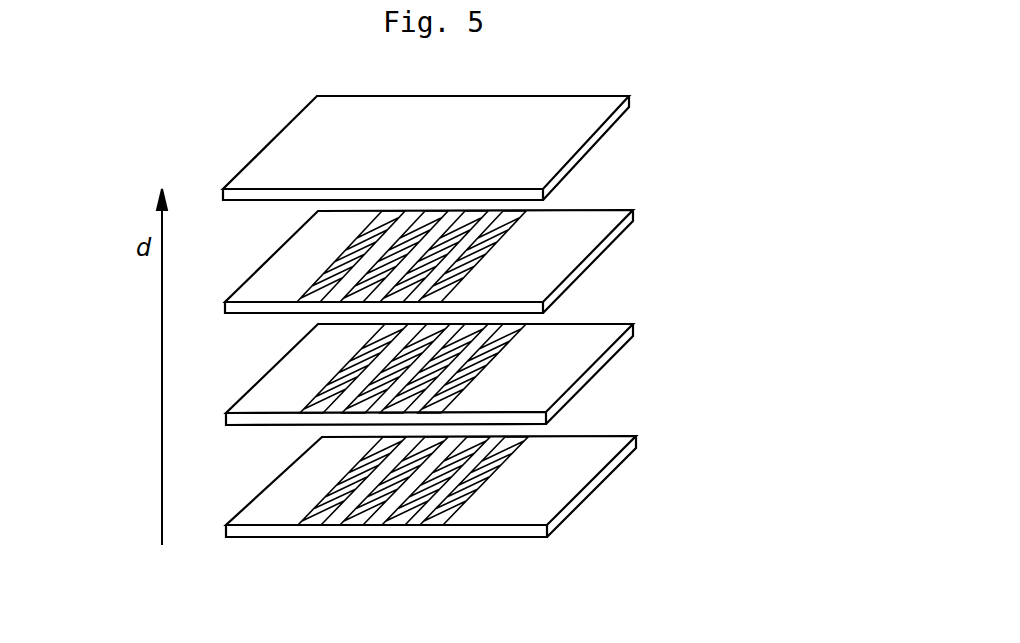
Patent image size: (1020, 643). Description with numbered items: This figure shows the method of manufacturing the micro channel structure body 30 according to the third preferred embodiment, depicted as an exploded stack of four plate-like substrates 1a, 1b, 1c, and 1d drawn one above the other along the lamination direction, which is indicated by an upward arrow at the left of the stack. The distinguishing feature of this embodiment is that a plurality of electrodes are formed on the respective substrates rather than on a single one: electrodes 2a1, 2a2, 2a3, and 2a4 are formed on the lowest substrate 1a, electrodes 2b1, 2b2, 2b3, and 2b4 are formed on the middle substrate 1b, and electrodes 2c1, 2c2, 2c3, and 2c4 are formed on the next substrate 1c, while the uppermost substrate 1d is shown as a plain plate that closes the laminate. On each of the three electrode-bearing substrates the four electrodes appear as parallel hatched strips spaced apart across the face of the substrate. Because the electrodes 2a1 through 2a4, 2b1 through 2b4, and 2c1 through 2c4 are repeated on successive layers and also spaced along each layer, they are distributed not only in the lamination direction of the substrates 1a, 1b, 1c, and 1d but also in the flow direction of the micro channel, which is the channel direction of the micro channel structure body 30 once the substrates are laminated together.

The micro channel structure body 30 is at (823, 387).
The substrate 1a is at (622, 463).
The substrate 1b is at (625, 341).
The substrate 1c is at (634, 214).
The substrate 1d is at (631, 103).
The electrode 2a1 is at (313, 525).
The electrode 2a2 is at (350, 525).
The electrode 2a3 is at (392, 525).
The electrode 2a4 is at (430, 525).
The electrode 2b1 is at (333, 372).
The electrode 2b2 is at (335, 397).
The electrode 2b3 is at (483, 353).
The electrode 2b4 is at (467, 382).
The electrode 2c1 is at (331, 271).
The electrode 2c2 is at (348, 289).
The electrode 2c3 is at (502, 237).
The electrode 2c4 is at (472, 263).